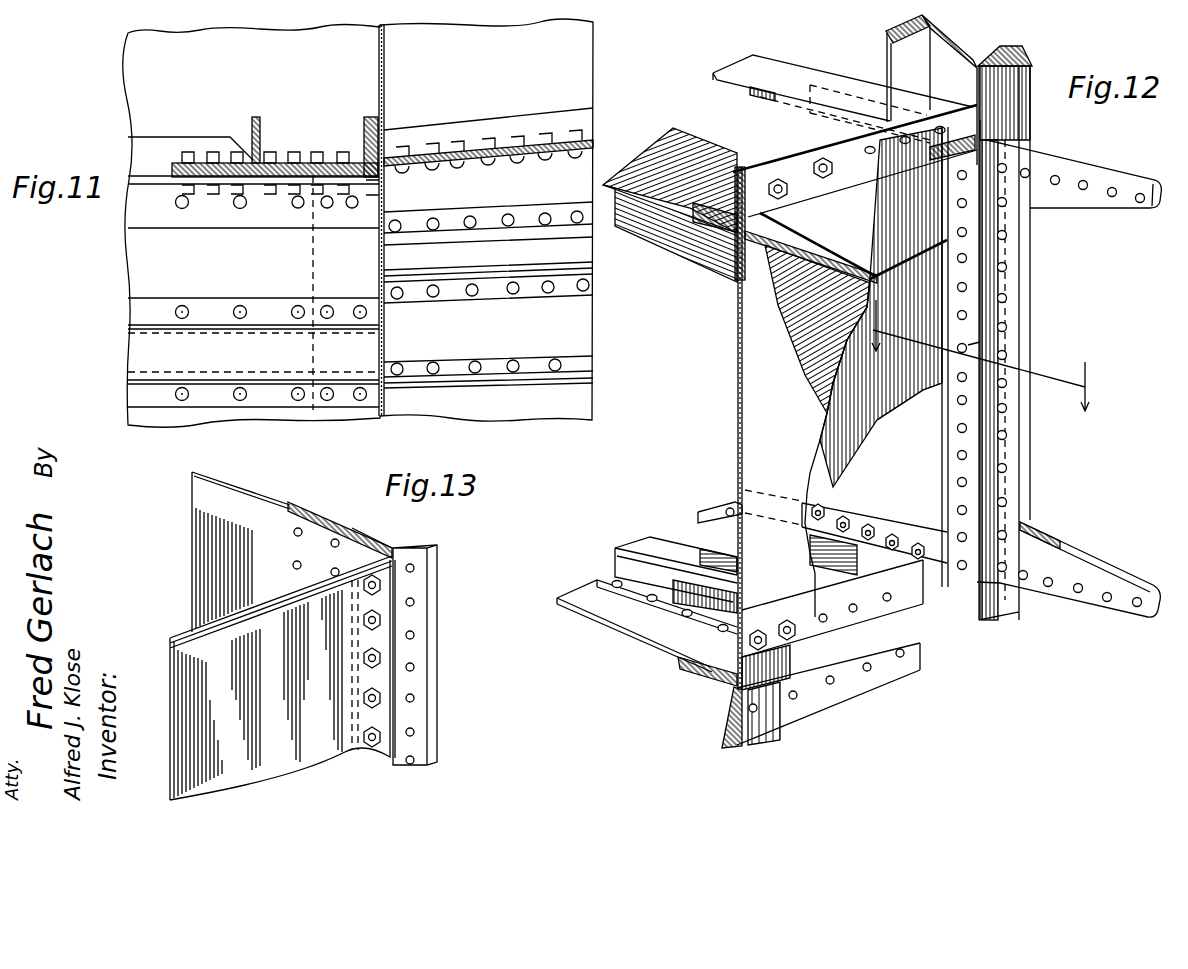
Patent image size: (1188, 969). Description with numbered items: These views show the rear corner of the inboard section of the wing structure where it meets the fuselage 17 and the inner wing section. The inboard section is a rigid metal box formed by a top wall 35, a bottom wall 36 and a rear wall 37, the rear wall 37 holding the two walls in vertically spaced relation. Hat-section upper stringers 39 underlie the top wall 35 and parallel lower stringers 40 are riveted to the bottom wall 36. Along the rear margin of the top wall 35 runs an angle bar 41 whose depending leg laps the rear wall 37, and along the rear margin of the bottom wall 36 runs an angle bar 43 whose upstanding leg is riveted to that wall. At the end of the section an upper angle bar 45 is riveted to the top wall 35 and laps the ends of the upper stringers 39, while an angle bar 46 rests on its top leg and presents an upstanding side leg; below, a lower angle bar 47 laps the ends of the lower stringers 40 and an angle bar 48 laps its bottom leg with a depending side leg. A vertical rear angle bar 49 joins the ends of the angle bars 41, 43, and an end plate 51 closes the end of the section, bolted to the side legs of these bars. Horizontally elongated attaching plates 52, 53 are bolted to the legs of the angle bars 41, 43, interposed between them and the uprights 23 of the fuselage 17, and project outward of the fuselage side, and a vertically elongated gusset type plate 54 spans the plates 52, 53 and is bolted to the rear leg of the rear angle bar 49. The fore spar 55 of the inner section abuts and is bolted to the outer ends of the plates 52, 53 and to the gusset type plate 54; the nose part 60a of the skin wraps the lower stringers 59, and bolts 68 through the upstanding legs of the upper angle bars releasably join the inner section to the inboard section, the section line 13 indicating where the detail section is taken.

In FIG. 12, the section line 13— 13 is at (982, 355).
In FIG. 11, the fuselage 17 is at (384, 74).
In FIG. 11, the uprights 23 is at (260, 120).
In FIG. 12, the uprights 23 is at (935, 56).
In FIG. 12, the top wall 35 is at (685, 132).
In FIG. 11, the bottom wall 36 is at (253, 273).
In FIG. 12, the bottom wall 36 is at (697, 549).
In FIG. 11, the rear wall 37 is at (144, 176).
In FIG. 13, the rear wall 37 is at (254, 497).
In FIG. 12, the rear wall 37 is at (912, 478).
In FIG. 12, the upper stringers 39 is at (640, 224).
In FIG. 11, the lower stringers 40 is at (250, 338).
In FIG. 12, the lower stringers 40 is at (640, 548).
In FIG. 12, the angle bar 41 is at (778, 72).
In FIG. 11, the angle bar 43 is at (199, 196).
In FIG. 12, the angle bar 43 is at (720, 510).
In FIG. 12, the upper angle bar 45 is at (735, 268).
In FIG. 12, the angle bar 46 is at (703, 221).
In FIG. 12, the lower angle bar 47 is at (677, 656).
In FIG. 12, the angle bar 48 is at (705, 688).
In FIG. 11, the rear angle bar 49 is at (372, 206).
In FIG. 13, the rear angle bar 49 is at (388, 541).
In FIG. 12, the rear angle bar 49 is at (975, 352).
In FIG. 11, the end plate 51 is at (388, 264).
In FIG. 13, the end plate 51 is at (279, 612).
In FIG. 12, the end plate 51 is at (752, 421).
In FIG. 11, the attaching plate 52 is at (200, 165).
In FIG. 12, the attaching plate 52 is at (1072, 178).
In FIG. 12, the attaching plate 53 is at (1060, 558).
In FIG. 13, the gusset type plate 54 is at (428, 595).
In FIG. 12, the gusset type plate 54 is at (1010, 308).
In FIG. 11, the fore spar 55 is at (592, 149).
In FIG. 11, the lower stringers 59 is at (495, 266).
In FIG. 11, the nose part 60a is at (572, 338).
In FIG. 12, the bolts 68 is at (772, 180).